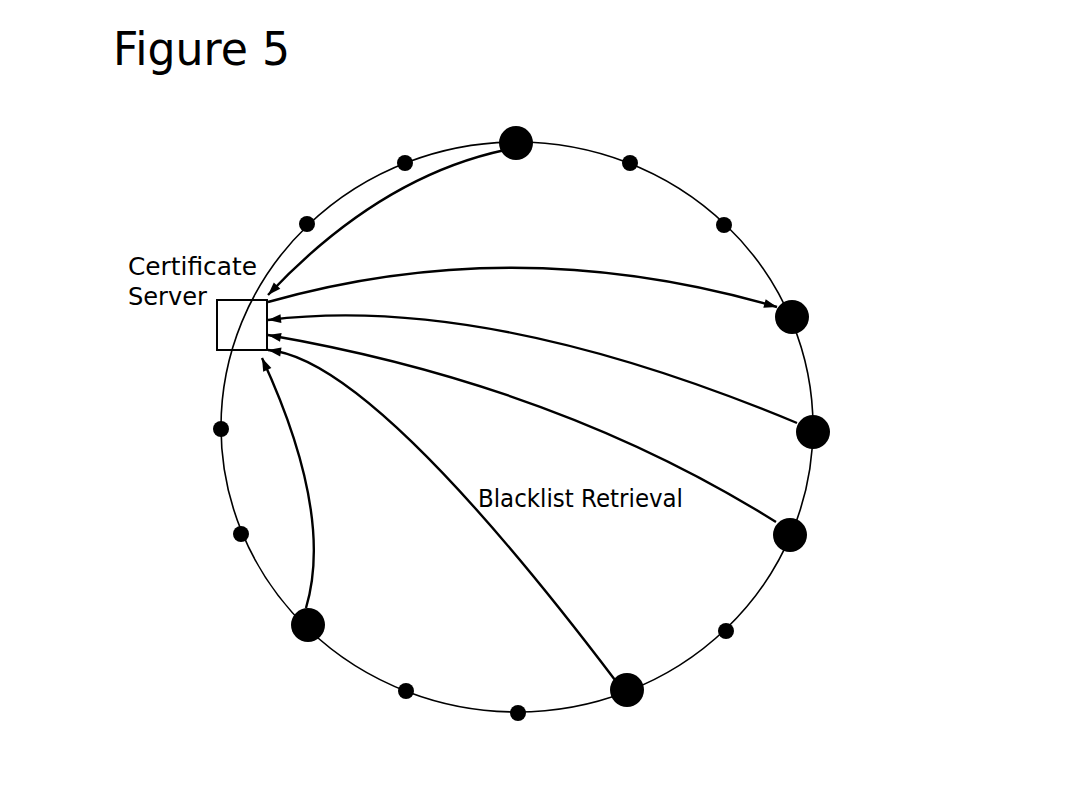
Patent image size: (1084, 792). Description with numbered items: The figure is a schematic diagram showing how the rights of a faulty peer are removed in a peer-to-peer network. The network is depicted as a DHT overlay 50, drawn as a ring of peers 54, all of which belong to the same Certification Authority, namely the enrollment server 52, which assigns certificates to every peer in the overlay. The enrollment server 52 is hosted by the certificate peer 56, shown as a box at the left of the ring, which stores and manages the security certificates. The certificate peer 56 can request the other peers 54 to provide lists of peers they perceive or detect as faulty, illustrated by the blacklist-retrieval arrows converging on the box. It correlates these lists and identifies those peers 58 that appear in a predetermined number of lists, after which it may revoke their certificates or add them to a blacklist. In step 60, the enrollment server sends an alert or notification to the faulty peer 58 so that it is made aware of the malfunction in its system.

The DHT overlay 50 is at (611, 60).
The enrollment server 52 is at (214, 344).
The peers 54 is at (636, 158).
The certificate peer 56 is at (207, 327).
The faulty peers 58 is at (808, 308).
The notification step 60 is at (600, 275).